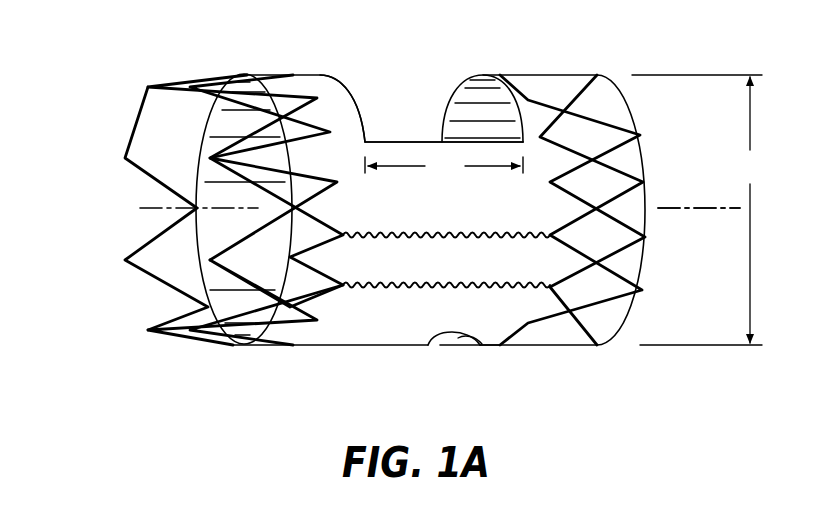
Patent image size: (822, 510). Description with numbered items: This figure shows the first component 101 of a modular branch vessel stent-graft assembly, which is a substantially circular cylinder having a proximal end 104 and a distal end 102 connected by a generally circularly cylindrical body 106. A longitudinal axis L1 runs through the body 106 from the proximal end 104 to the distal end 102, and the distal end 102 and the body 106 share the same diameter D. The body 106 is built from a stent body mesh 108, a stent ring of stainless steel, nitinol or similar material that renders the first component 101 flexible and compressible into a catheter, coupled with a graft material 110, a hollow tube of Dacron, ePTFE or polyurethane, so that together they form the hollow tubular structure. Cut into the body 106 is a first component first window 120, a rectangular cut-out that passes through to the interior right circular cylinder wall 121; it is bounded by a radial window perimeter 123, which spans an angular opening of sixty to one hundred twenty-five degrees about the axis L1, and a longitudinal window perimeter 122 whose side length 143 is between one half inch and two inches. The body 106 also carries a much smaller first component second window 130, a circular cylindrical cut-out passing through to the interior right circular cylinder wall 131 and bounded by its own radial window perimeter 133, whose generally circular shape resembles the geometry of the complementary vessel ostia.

The first component 101 is at (380, 352).
The distal end 102 is at (597, 347).
The proximal end 104 is at (243, 347).
The body 106 is at (263, 78).
The stent body mesh 108 is at (210, 110).
The graft material 110 is at (315, 333).
The first component first window 120 is at (420, 79).
The interior right circular cylinder wall 121 is at (353, 88).
The longitudinal window perimeter 122 is at (423, 142).
The radial window perimeter 123 is at (478, 80).
The first component second window 130 is at (455, 350).
The interior right circular cylinder wall 131 is at (473, 347).
The radial window perimeter 133 is at (430, 348).
The side length 143 is at (444, 166).
The diameter D is at (697, 210).
The longitudinal axis L1 is at (672, 208).